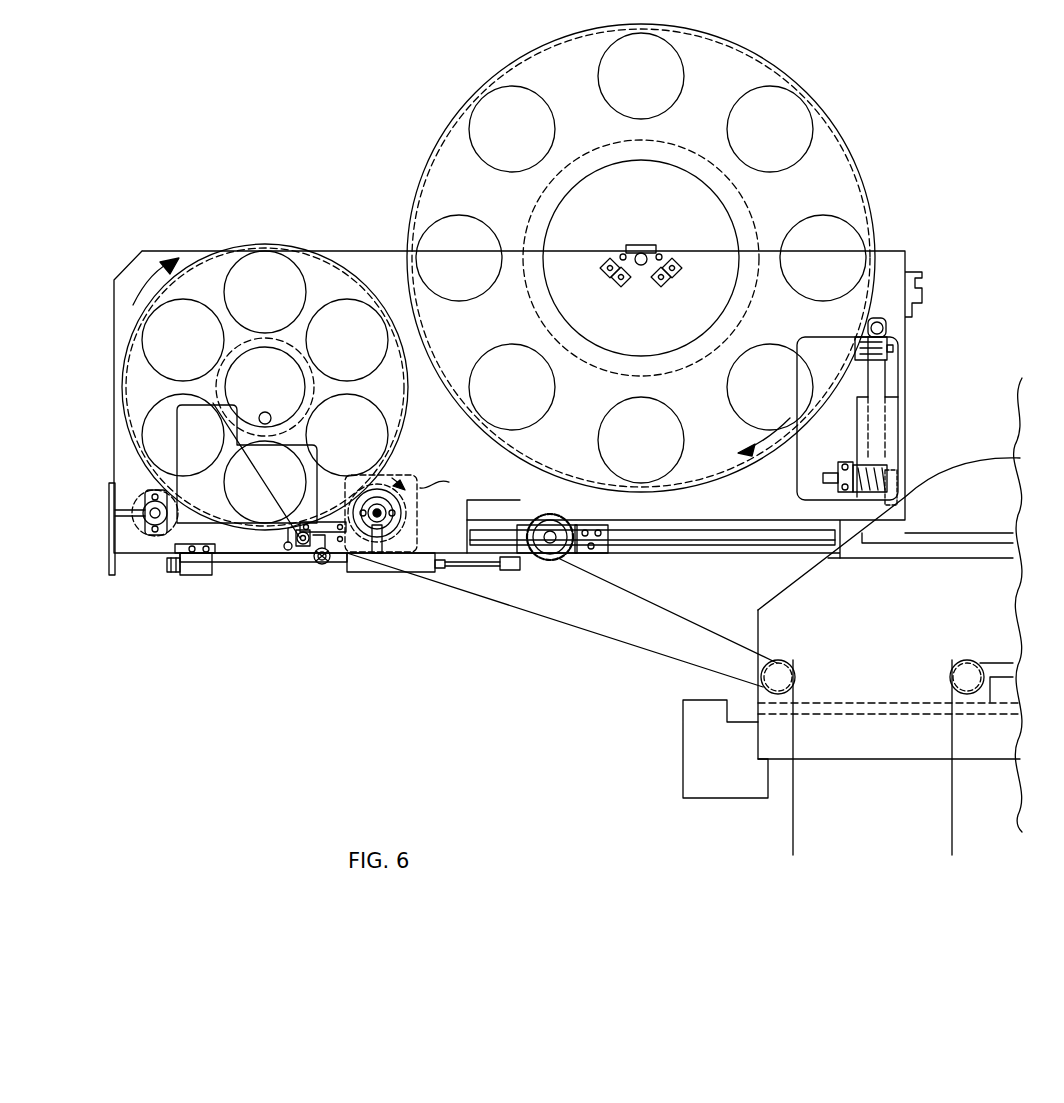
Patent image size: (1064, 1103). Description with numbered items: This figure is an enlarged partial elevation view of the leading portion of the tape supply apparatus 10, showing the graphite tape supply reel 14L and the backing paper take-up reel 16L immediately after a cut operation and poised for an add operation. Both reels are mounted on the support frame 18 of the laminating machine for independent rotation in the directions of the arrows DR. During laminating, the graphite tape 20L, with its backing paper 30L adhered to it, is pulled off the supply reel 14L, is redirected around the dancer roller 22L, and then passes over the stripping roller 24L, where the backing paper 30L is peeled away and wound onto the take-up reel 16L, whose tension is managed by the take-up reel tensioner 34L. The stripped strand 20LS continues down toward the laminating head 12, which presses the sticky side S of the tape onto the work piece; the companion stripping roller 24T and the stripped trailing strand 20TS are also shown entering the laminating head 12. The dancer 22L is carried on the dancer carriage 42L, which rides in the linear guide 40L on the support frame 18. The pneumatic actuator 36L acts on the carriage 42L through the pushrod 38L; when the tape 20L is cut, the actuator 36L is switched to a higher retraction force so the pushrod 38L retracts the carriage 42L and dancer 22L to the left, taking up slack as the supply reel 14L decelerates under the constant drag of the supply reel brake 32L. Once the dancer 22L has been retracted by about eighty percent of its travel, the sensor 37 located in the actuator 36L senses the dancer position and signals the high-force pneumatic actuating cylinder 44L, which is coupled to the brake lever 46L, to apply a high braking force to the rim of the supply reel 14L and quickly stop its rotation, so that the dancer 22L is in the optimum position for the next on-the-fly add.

The apparatus 10 is at (288, 146).
The laminating head 12 is at (870, 760).
The graphite tape supply reel 14L is at (432, 130).
The backing paper take-up reel 16L is at (229, 248).
The support frame 18 is at (137, 555).
The graphite tape 20L is at (658, 603).
The dancer roller 22L is at (572, 560).
The stripping roller 24L is at (790, 663).
The stripping roller 24T is at (955, 663).
The backing paper 30L is at (571, 625).
The supply reel brake 32L is at (895, 342).
The backing paper take-up reel tensioner 34L is at (402, 470).
The pneumatic actuator 36L is at (238, 570).
The sensor 37 is at (306, 570).
The pushrod 38L is at (467, 578).
The linear guide 40L is at (737, 530).
The dancer carriage 42L is at (608, 524).
The pneumatic actuating cylinder 44L is at (880, 468).
The brake lever 46L is at (893, 490).
The strand 20LS is at (797, 830).
The strand 20TS is at (950, 822).
The sticky side S is at (647, 627).
The direction of rotation arrows DR is at (148, 290).